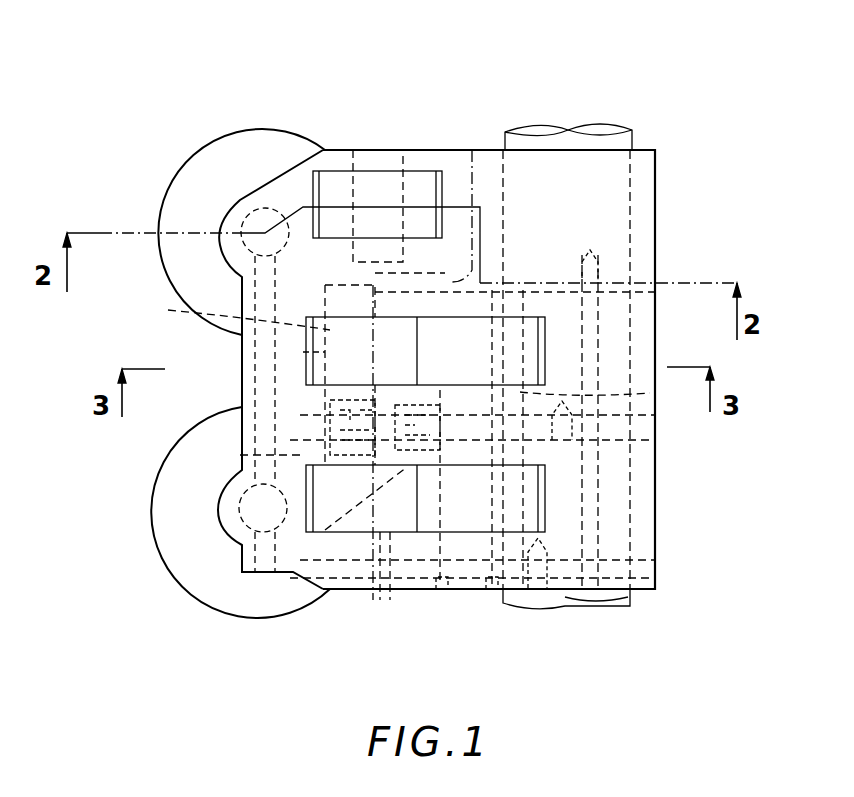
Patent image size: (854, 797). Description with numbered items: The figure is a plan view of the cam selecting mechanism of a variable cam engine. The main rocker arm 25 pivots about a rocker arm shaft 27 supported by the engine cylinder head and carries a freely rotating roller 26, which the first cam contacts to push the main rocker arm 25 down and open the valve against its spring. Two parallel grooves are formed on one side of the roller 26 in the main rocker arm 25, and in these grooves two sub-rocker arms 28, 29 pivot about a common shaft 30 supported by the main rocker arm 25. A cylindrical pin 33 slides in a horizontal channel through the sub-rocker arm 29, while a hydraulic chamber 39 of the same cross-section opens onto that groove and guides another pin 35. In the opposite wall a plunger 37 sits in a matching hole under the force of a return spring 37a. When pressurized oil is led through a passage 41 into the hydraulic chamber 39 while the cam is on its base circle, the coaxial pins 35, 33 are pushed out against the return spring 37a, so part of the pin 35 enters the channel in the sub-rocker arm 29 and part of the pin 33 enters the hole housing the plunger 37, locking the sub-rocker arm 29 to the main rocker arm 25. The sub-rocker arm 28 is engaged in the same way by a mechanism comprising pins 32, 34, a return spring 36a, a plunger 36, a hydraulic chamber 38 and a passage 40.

The main rocker arm 25 is at (428, 150).
The roller 26 is at (330, 185).
The rocker arm shaft 27 is at (598, 128).
The sub-rocker arm 28 is at (482, 494).
The sub-rocker arm 29 is at (480, 337).
The common shaft 30 is at (648, 404).
The pin 32 is at (378, 560).
The cylindrical pin 33 is at (303, 352).
The pin 34 is at (388, 590).
The pin 35 is at (320, 290).
The plunger 36 is at (307, 453).
The return spring 36a is at (320, 545).
The plunger 37 is at (395, 405).
The return spring 37a is at (335, 432).
The hydraulic chamber 38 is at (432, 597).
The hydraulic chamber 39 is at (231, 375).
The passage 40 is at (475, 597).
The passage 41 is at (472, 170).